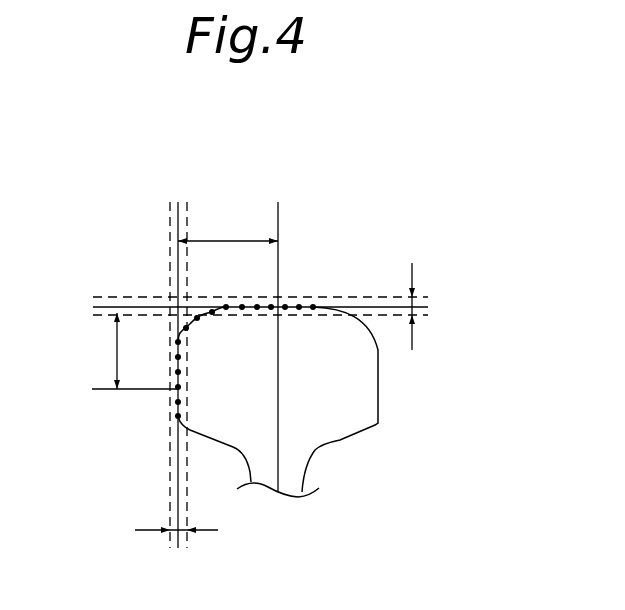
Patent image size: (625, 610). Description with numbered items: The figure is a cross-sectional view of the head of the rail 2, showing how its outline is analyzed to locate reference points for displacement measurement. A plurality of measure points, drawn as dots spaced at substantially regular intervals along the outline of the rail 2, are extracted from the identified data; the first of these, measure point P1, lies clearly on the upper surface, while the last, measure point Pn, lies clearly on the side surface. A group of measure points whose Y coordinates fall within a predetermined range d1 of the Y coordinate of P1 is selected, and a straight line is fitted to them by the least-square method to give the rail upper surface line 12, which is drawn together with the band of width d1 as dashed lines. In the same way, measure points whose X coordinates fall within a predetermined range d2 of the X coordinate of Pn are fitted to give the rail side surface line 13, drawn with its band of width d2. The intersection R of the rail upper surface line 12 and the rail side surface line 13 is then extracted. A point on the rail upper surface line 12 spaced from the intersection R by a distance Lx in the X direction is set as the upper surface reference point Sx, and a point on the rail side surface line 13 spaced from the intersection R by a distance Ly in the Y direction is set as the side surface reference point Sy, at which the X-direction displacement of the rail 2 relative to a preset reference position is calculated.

The rail 2 is at (357, 408).
The rail upper surface line 12 is at (375, 300).
The rail side surface line 13 is at (173, 450).
The intersection R is at (165, 298).
The upper surface reference point Sx is at (282, 295).
The side surface reference point Sy is at (165, 396).
The distance in X direction Lx is at (228, 230).
The distance in Y direction Ly is at (104, 351).
The predetermined range d1 is at (428, 304).
The predetermined range d2 is at (170, 531).
The measure point P1 is at (313, 327).
The measure point Pn is at (197, 416).